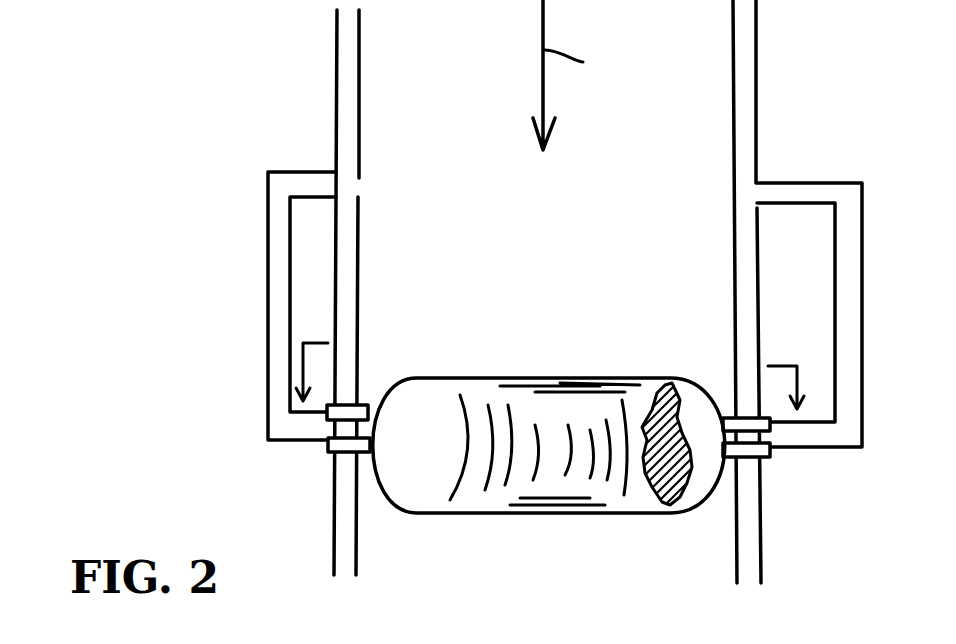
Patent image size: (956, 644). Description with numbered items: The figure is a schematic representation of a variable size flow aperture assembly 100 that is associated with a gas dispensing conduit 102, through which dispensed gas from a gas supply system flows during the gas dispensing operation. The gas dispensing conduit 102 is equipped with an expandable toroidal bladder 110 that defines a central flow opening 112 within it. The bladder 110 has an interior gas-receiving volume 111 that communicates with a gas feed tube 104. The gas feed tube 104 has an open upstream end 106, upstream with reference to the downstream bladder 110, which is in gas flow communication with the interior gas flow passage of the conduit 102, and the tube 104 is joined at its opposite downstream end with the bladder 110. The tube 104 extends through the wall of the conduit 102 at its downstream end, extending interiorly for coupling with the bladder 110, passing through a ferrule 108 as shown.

The variable size flow aperture assembly 100 is at (242, 325).
The gas dispensing conduit 102 is at (336, 100).
The gas feed tube 104 is at (265, 210).
The open upstream end 106 is at (357, 185).
The ferrule 108 is at (330, 450).
The expandable toroidal bladder 110 is at (415, 380).
The interior gas-receiving volume 111 is at (660, 500).
The central flow opening 112 is at (553, 418).